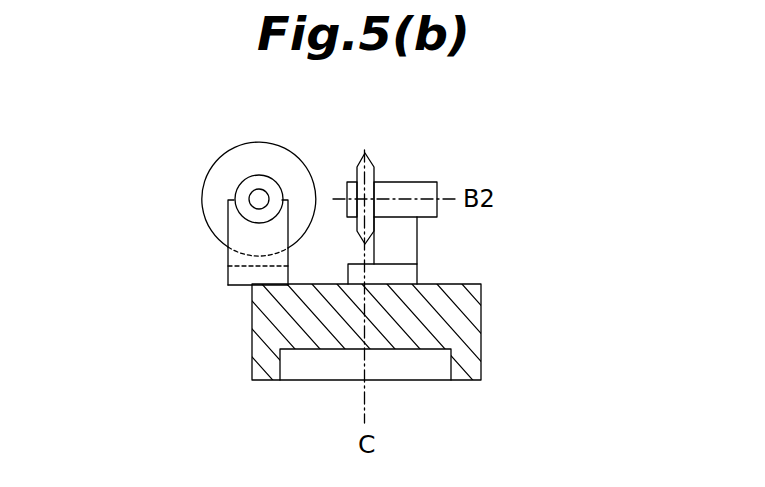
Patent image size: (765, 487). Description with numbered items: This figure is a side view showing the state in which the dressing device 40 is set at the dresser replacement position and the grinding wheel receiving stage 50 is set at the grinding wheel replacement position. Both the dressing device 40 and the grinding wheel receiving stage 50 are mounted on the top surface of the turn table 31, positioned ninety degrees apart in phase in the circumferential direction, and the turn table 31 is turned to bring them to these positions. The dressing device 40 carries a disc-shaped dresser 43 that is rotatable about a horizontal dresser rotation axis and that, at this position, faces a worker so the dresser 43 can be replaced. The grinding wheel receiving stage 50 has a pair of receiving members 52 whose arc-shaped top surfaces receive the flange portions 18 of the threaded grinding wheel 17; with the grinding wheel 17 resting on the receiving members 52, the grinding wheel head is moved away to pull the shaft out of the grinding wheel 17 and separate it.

The threaded grinding wheel 17 is at (219, 158).
The flange portions 18 is at (215, 192).
The receiving members 52 is at (227, 263).
The grinding wheel receiving stage 50 is at (187, 236).
The dresser 43 is at (375, 166).
The dressing device 40 is at (487, 210).
The turn table 31 is at (482, 325).